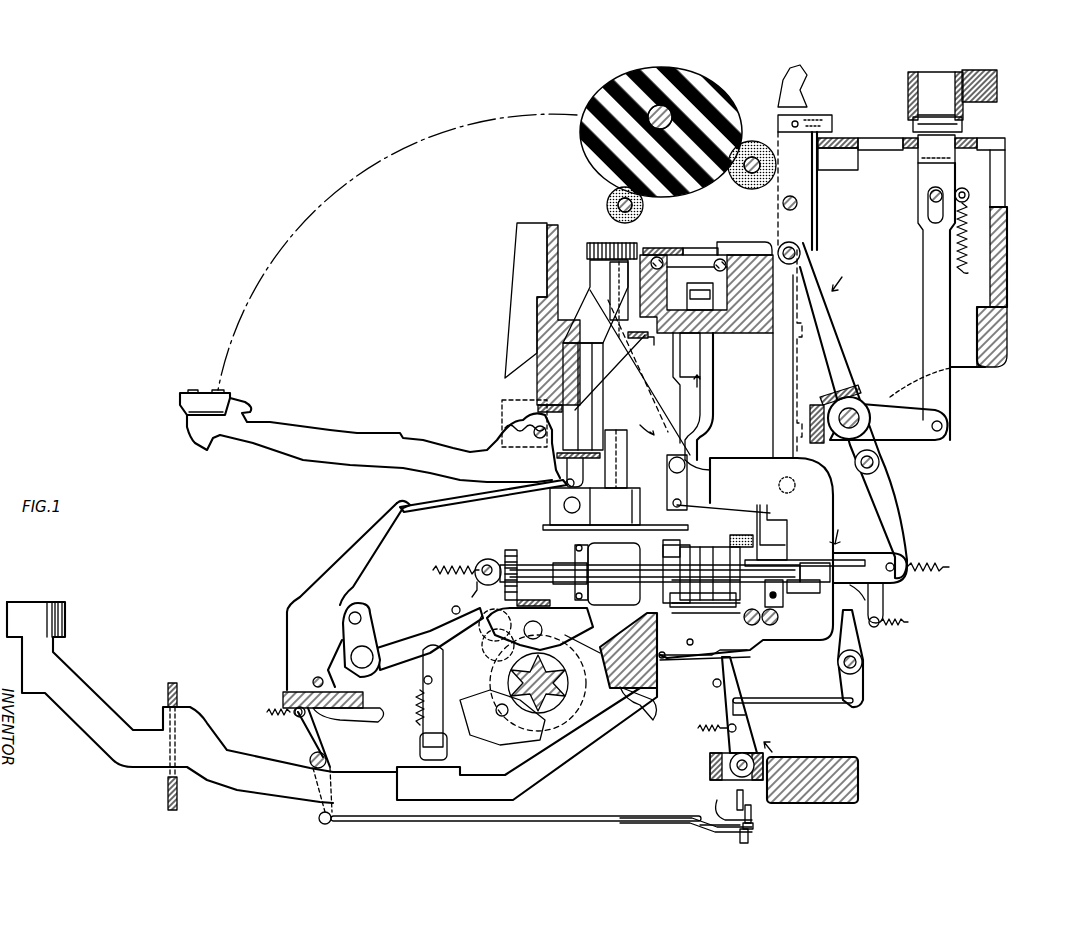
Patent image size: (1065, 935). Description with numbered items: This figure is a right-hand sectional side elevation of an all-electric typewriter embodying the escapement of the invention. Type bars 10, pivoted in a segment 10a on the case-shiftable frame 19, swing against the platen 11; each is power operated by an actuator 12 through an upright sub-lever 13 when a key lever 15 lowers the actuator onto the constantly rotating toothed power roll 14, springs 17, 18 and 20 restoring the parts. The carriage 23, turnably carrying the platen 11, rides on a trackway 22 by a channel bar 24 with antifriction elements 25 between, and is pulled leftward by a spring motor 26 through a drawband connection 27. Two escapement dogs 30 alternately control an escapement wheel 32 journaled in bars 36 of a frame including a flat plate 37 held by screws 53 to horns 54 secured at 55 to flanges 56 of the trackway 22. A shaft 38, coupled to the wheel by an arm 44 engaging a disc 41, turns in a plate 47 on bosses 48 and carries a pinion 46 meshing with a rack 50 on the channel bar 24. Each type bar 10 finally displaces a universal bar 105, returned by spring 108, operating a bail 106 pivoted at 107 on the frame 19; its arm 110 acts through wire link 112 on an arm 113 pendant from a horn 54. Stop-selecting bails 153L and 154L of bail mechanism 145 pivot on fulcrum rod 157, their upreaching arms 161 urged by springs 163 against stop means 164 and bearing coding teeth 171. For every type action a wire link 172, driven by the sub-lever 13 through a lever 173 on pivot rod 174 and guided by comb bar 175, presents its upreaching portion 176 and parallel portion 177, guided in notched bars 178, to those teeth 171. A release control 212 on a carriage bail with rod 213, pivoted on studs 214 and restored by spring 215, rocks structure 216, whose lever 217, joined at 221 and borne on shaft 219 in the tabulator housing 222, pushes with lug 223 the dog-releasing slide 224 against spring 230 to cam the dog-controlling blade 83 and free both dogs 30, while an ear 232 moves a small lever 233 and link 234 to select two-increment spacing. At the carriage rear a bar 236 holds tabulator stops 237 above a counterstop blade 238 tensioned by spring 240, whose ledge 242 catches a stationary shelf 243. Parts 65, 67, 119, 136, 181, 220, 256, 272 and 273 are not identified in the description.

The type bars 10 is at (356, 443).
The segment 10a is at (516, 268).
The platen 11 is at (585, 81).
The actuator 12 is at (440, 618).
The sub-lever 13 is at (328, 575).
The toothed power roll 14 is at (555, 682).
The key levers 15 is at (110, 714).
The spring 17 is at (278, 715).
The spring 18 is at (582, 638).
The case-shiftable frame 19 is at (642, 395).
The spring 20 is at (473, 598).
The trackway 22 is at (748, 333).
The carriage 23 is at (615, 193).
The channel bar 24 is at (694, 248).
The antifriction elements 25 is at (717, 249).
The spring motor 26 is at (687, 388).
The drawband connection 27 is at (700, 376).
The escapement dogs 30 is at (573, 549).
The escapement wheel 32 is at (562, 560).
The bars 36 is at (652, 602).
The horizontal flat plate 37 is at (795, 563).
The shaft 38 is at (614, 443).
The disc 41 is at (543, 532).
The arm 44 is at (573, 515).
The gear pinion 46 is at (606, 243).
The plate 47 is at (590, 258).
The bosses 48 is at (590, 280).
The rack 50 is at (648, 248).
The screws 53 is at (817, 594).
The horns 54 is at (830, 514).
The securing point 55 is at (710, 470).
The flanges 56 is at (713, 392).
The collar 65 is at (674, 543).
The sleeve 67 is at (695, 547).
The dog controlling blade 83 is at (735, 536).
The curved universal bar 105 is at (537, 408).
The bail 106 is at (638, 367).
The pivotal support 107 is at (698, 463).
The spring 108 is at (639, 330).
The downreaching arm 110 is at (677, 471).
The wire link 112 is at (760, 505).
The arm 113 is at (782, 530).
The block 119 is at (796, 604).
The lever 136 is at (668, 656).
The bail mechanism 145 is at (811, 766).
The bail 153L is at (690, 818).
The bail 154L is at (718, 808).
The fulcrum rod 157 is at (710, 768).
The upreaching arm 161 is at (746, 724).
The springs 163 is at (698, 724).
The stop means 164 is at (713, 686).
The coding tooth 171 is at (753, 831).
The wire link 172 is at (426, 820).
The levers 173 is at (320, 726).
The pivot rod 174 is at (312, 758).
The comb bar 175 is at (283, 698).
The straight upreaching portion 176 is at (760, 822).
The short link portion 177 is at (753, 809).
The elongate bars 178 is at (722, 830).
The pin 181 is at (743, 792).
The release control 212 is at (784, 90).
The rod 213 is at (782, 250).
The studs 214 is at (784, 204).
The spring 215 is at (818, 116).
The pivoted structure 216 is at (853, 278).
The lever 217 is at (831, 310).
The shaft 219 is at (863, 405).
The plate 220 is at (864, 371).
The rigid connection 221 is at (888, 470).
The tabulating mechanism housing 222 is at (1002, 312).
The lug 223 is at (882, 584).
The dog releasing slide 224 is at (868, 547).
The spring 230 is at (920, 562).
The ear 232 is at (873, 625).
The small lever 233 is at (862, 684).
The link 234 is at (856, 704).
The bar 236 is at (967, 118).
The tabulator stops 237 is at (962, 126).
The tabulator counterstop blade 238 is at (923, 284).
The spring 240 is at (970, 248).
The ledge 242 is at (920, 163).
The stationary shelf 243 is at (985, 160).
The lever 256 is at (901, 440).
The pawl 272 is at (500, 740).
The base plate 273 is at (540, 745).